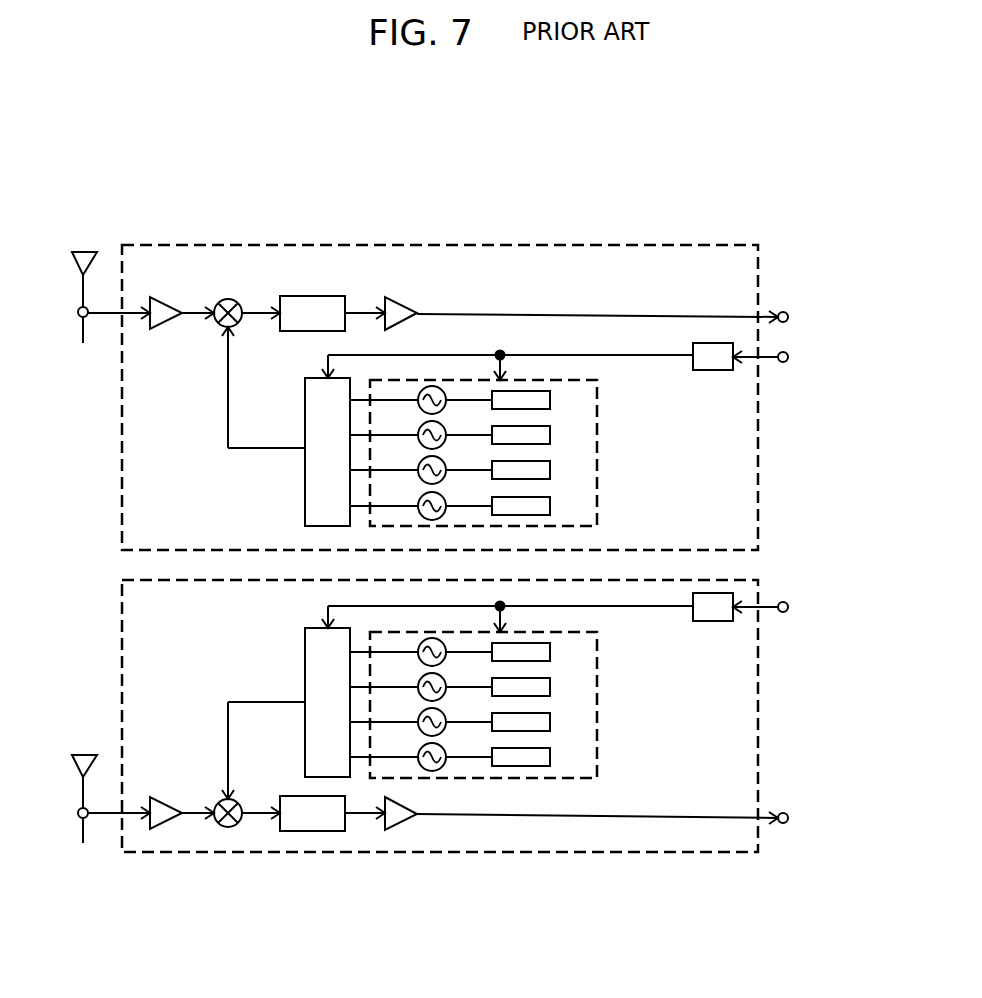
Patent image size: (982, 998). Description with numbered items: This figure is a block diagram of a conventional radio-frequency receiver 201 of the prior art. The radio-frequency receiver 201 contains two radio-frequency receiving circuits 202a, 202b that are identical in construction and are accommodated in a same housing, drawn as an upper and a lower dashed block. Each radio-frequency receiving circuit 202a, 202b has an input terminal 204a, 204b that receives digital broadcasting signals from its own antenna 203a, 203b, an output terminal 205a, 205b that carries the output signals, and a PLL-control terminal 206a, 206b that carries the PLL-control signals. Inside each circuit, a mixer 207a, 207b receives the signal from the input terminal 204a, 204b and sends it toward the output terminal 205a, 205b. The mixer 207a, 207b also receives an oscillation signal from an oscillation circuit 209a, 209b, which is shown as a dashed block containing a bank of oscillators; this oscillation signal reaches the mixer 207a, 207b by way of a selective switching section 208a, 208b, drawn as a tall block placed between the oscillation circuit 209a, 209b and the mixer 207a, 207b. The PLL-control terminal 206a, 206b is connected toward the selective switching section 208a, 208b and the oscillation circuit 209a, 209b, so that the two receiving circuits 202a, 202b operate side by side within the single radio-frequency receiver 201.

The radio-frequency receiver 201 is at (687, 205).
The radio-frequency receiving circuit 202a is at (368, 243).
The radio-frequency receiving circuit 202b is at (367, 855).
The antenna 203a is at (85, 249).
The antenna 203b is at (87, 752).
The input terminal 204a is at (84, 342).
The input terminal 204b is at (85, 843).
The output terminal 205a is at (787, 310).
The output terminal 205b is at (798, 790).
The PLL-control terminal 206a is at (786, 362).
The PLL-control terminal 206b is at (787, 598).
The mixer 207a is at (217, 298).
The mixer 207b is at (215, 797).
The selective switching section 208a is at (302, 488).
The selective switching section 208b is at (303, 752).
The oscillation circuit 209a is at (598, 452).
The oscillation circuit 209b is at (600, 700).